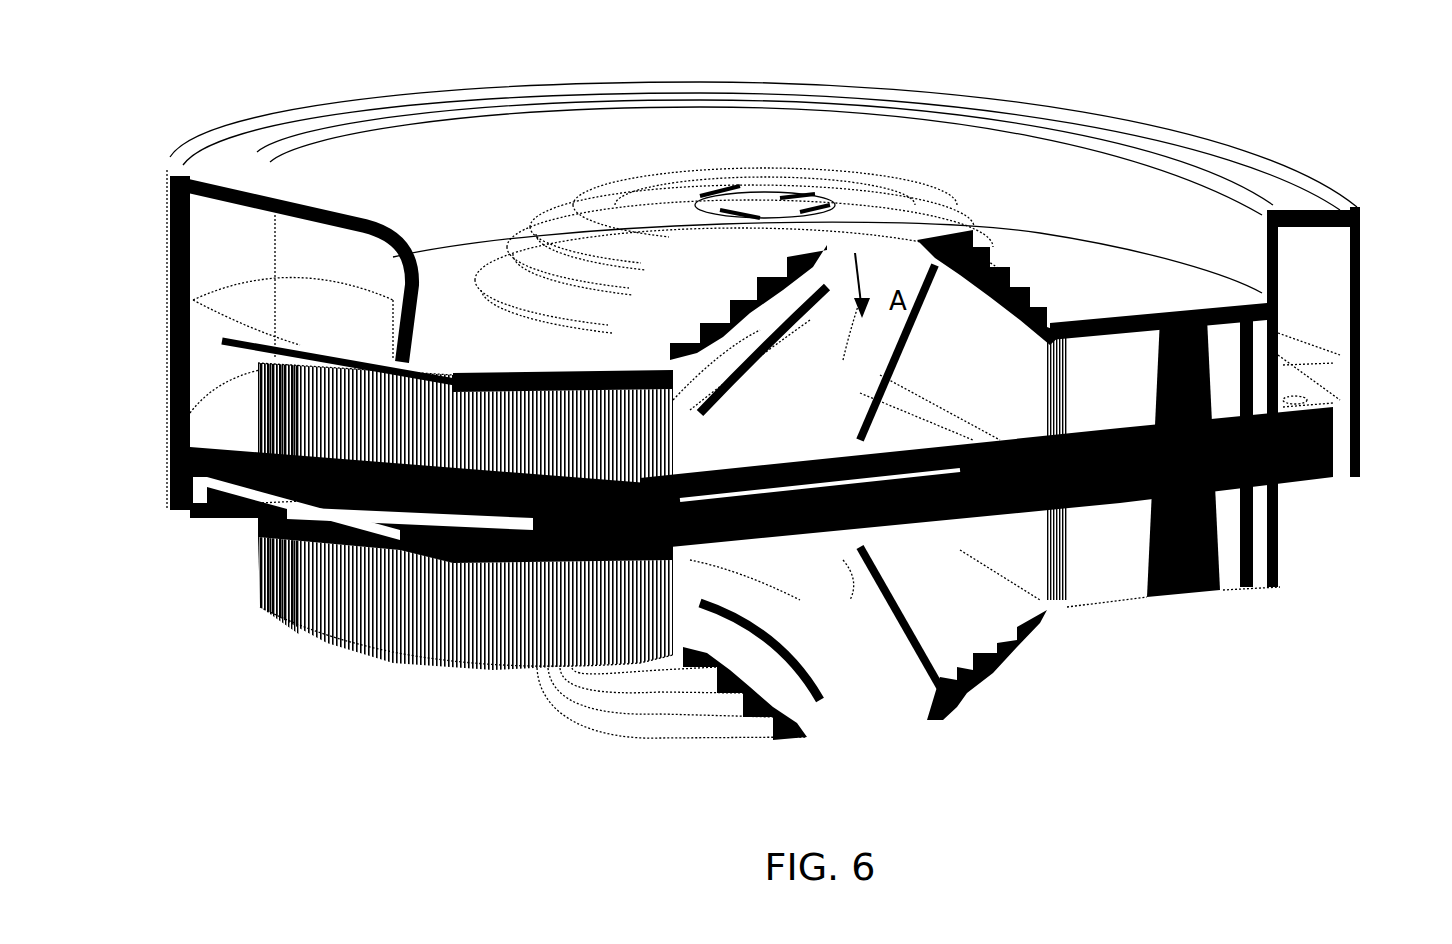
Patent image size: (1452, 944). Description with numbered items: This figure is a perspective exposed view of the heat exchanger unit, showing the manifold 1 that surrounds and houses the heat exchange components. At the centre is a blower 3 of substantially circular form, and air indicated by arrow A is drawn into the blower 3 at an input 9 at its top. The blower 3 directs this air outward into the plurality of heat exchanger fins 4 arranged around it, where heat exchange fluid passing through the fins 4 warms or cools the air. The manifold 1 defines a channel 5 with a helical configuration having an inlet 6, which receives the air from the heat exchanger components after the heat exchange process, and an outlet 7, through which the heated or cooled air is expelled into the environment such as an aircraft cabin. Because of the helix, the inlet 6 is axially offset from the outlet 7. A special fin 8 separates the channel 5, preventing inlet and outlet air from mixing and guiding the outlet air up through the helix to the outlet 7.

The manifold 1 is at (1088, 130).
The blower 3 is at (800, 637).
The heat exchanger fins 4 is at (330, 622).
The channel 5 is at (218, 240).
The inlet 6 is at (1358, 233).
The outlet 7 is at (323, 208).
The fin 8 is at (1297, 357).
The input 9 is at (715, 210).